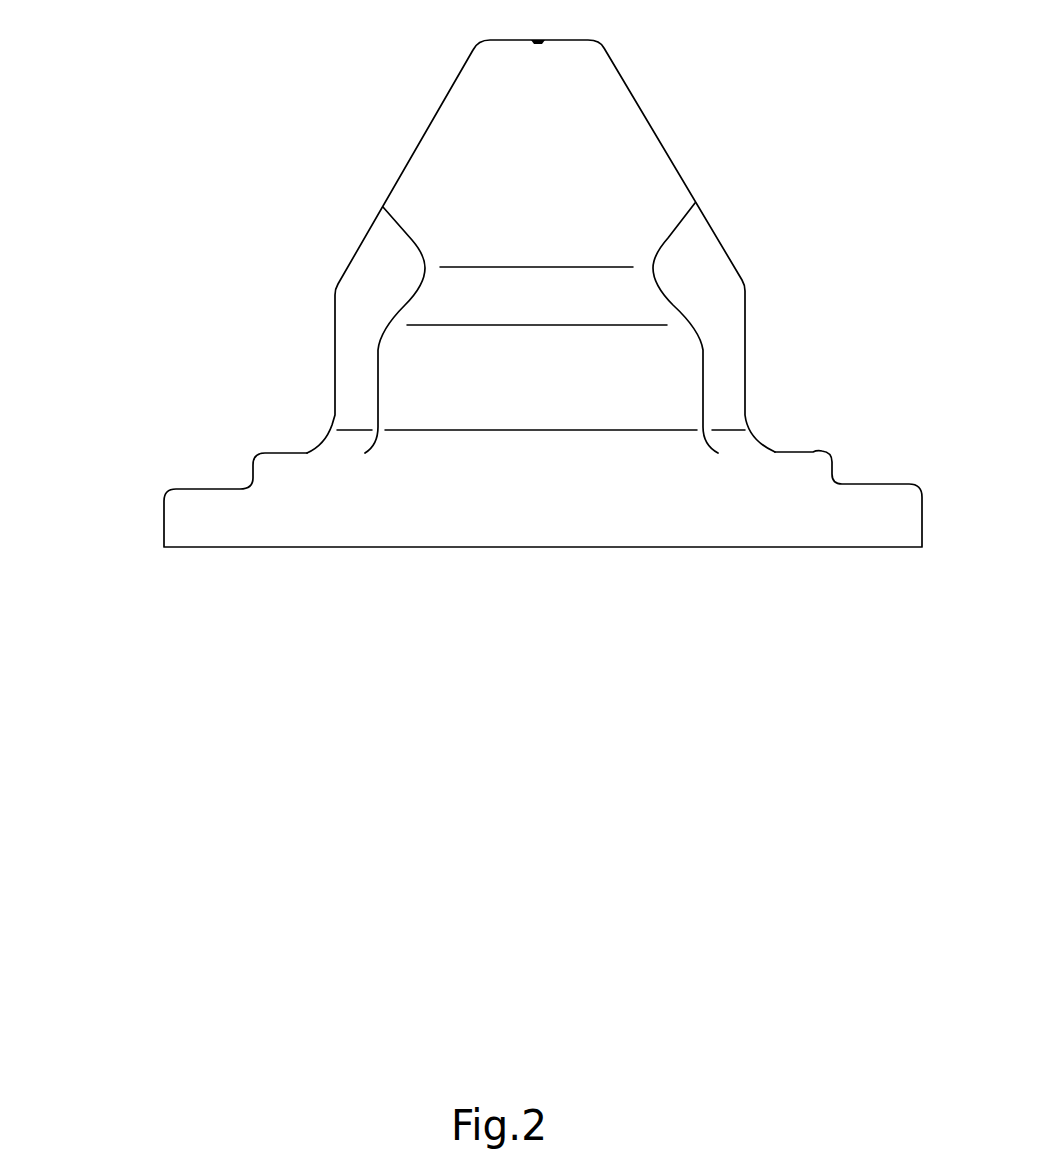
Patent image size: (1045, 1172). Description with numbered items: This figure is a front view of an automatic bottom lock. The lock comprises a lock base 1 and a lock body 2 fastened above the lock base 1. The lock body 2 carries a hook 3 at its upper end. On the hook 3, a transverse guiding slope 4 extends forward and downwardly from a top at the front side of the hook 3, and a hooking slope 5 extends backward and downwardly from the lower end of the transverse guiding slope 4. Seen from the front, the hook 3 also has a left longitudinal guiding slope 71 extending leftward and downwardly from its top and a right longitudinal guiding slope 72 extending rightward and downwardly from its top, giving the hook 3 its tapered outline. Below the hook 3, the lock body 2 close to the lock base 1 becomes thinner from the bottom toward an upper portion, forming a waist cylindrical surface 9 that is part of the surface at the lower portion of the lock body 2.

The lock base 1 is at (190, 495).
The lock body 2 is at (476, 296).
The hook 3 is at (469, 254).
The transverse guiding slope 4 is at (570, 103).
The hooking slope 5 is at (640, 303).
The waist cylindrical surface 9 is at (562, 377).
The left longitudinal guiding slope 71 is at (677, 170).
The right longitudinal guiding slope 72 is at (407, 160).